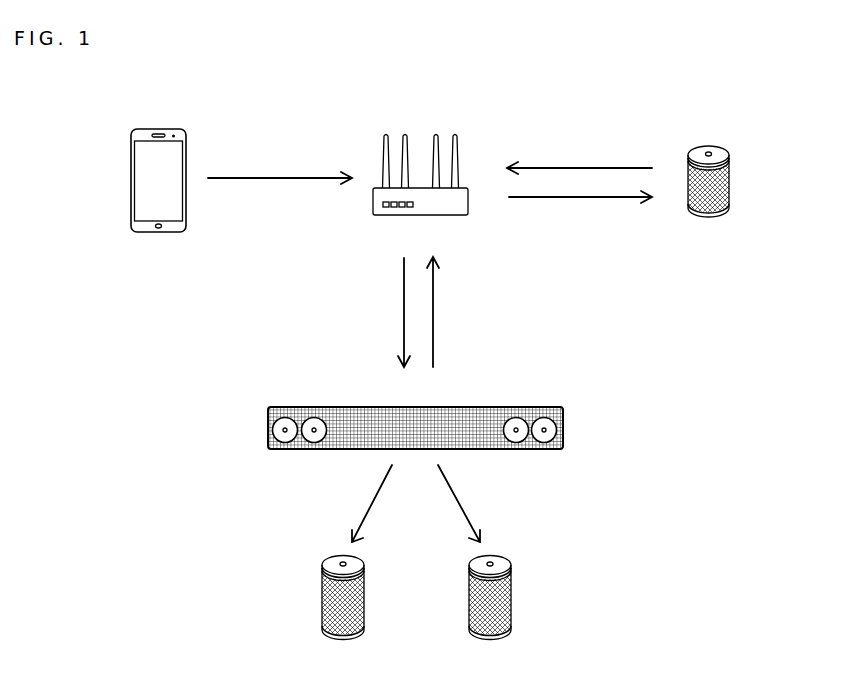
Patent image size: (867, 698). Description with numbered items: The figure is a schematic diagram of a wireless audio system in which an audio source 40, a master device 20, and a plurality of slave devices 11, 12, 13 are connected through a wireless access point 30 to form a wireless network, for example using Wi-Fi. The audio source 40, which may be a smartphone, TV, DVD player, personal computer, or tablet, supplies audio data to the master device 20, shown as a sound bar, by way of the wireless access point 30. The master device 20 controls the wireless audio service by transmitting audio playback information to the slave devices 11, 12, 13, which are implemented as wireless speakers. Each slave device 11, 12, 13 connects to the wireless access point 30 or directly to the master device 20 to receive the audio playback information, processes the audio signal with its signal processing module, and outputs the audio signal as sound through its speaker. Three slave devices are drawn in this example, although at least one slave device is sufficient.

The slave device 11 is at (706, 145).
The slave device 12 is at (320, 597).
The slave device 13 is at (514, 597).
The master device 20 is at (266, 428).
The wireless access point 30 is at (383, 132).
The audio source 40 is at (143, 132).